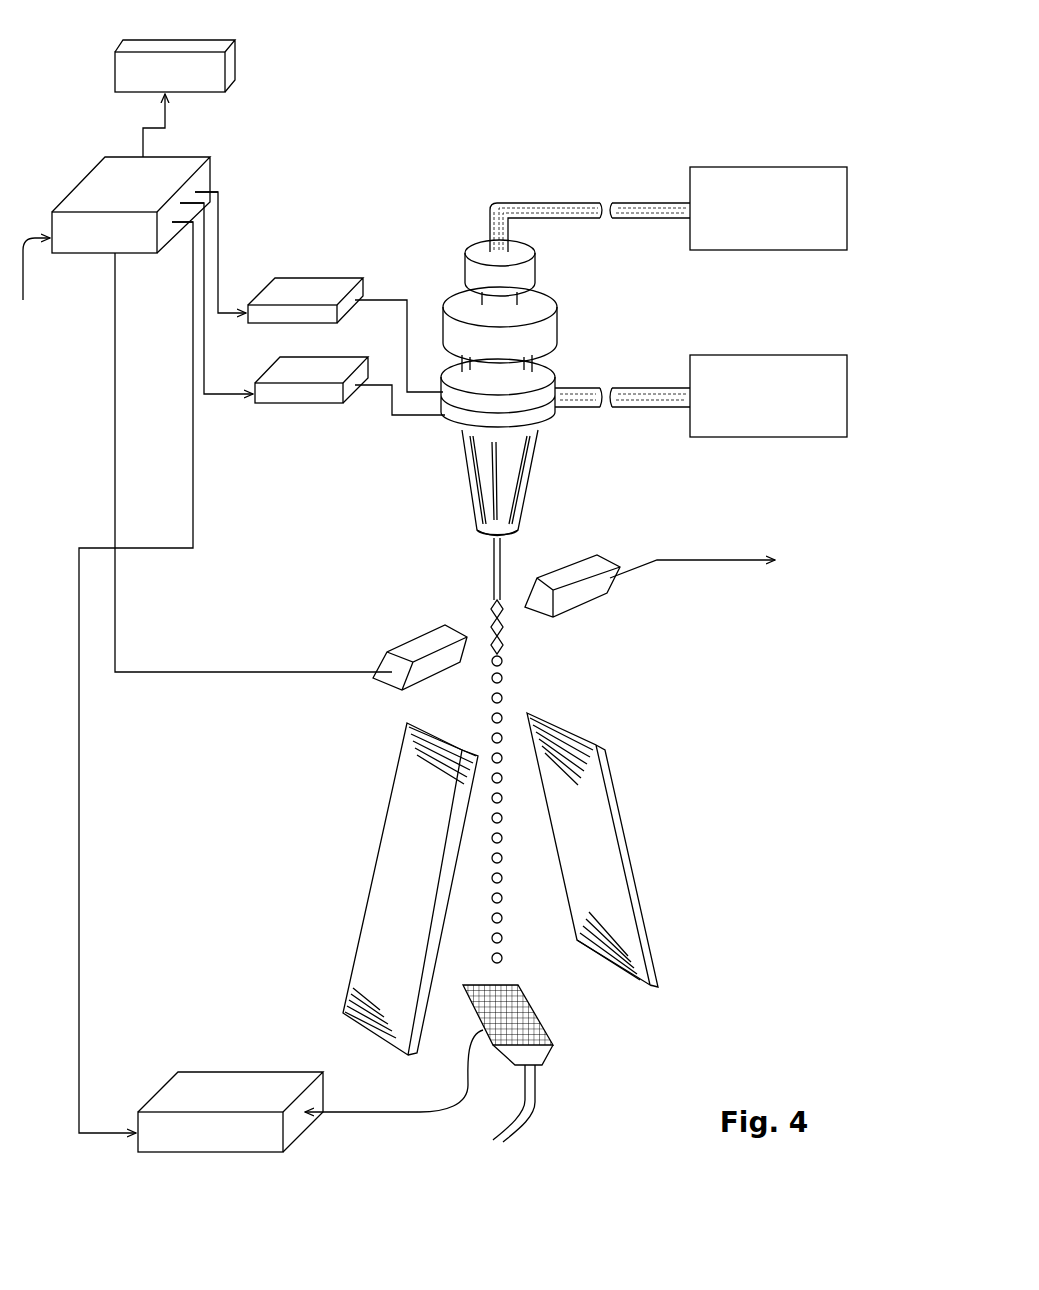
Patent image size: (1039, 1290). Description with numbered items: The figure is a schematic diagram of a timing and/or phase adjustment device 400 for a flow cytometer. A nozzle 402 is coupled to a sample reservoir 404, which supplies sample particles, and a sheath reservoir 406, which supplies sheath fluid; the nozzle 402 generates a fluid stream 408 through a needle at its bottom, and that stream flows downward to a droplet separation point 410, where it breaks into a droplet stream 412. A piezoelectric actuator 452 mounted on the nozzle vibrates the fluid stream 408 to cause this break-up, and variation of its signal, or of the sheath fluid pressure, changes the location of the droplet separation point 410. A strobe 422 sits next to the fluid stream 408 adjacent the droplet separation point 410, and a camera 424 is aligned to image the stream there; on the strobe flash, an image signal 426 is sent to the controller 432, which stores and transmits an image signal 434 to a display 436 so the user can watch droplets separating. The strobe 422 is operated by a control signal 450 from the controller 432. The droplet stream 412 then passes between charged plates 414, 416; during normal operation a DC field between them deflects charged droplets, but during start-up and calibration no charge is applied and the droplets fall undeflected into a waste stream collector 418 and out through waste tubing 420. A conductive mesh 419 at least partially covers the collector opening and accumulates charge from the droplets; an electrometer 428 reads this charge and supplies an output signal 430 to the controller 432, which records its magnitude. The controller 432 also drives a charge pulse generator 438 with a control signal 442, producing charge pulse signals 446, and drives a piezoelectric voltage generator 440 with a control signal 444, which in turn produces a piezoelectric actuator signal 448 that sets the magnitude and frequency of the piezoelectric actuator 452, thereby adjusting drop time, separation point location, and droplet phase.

The timing and/or phase adjustment device 400 is at (707, 82).
The nozzle 402 is at (503, 160).
The sample reservoir 404 is at (750, 167).
The sheath reservoir 406 is at (770, 355).
The fluid stream 408 is at (498, 567).
The droplet separation point 410 is at (503, 667).
The droplet stream 412 is at (515, 691).
The charged plate 414 is at (393, 777).
The charged plate 416 is at (613, 807).
The waste stream collector 418 is at (550, 1053).
The conductive mesh 419 is at (540, 1023).
The waste tubing 420 is at (535, 1090).
The strobe 422 is at (405, 634).
The camera 424 is at (570, 560).
The image signal 426 is at (27, 281).
The electrometer 428 is at (215, 1072).
The output signal 430 is at (95, 760).
The controller 432 is at (205, 188).
The image signal 434 is at (142, 142).
The display 436 is at (237, 54).
The charge pulse generator 438 is at (327, 278).
The piezoelectric voltage generator 440 is at (340, 405).
The control signal 442 is at (220, 230).
The control signal 444 is at (230, 397).
The charge pulse signals 446 is at (385, 298).
The piezoelectric actuator signal 448 is at (387, 407).
The control signal 450 is at (217, 670).
The piezoelectric actuator 452 is at (545, 430).